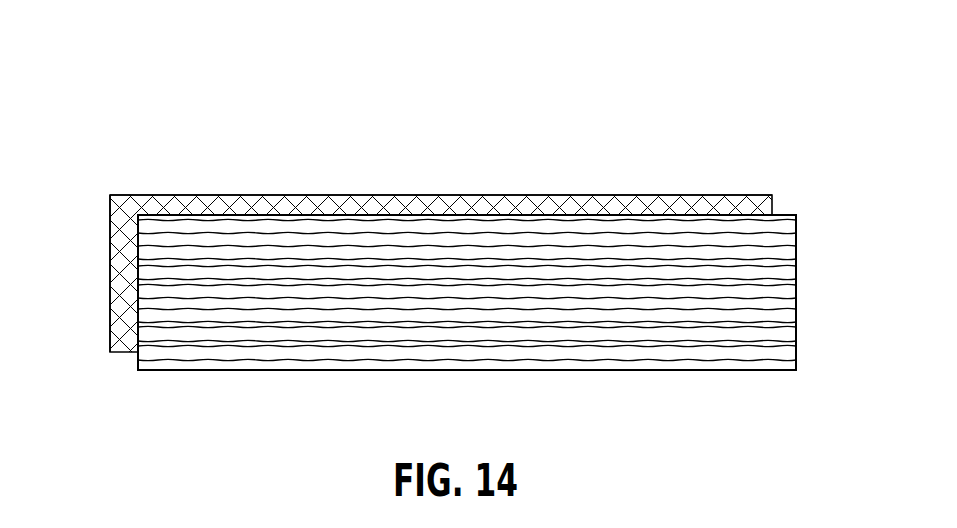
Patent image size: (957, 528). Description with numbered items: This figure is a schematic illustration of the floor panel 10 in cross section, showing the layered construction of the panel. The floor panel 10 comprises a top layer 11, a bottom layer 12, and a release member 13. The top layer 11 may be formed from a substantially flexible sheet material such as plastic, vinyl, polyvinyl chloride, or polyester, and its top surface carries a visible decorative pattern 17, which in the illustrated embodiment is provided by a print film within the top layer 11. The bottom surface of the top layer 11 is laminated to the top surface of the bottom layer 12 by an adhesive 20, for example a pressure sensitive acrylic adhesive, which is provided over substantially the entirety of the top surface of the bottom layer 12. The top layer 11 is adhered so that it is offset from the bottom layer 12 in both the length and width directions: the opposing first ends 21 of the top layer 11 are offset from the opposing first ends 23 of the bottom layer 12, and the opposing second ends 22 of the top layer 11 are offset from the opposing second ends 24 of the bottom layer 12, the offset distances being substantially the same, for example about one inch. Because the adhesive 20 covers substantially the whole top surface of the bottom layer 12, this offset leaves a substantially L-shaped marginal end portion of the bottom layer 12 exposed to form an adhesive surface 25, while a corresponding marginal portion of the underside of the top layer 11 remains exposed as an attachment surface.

The floor panel 10 is at (193, 168).
The top layer 11 is at (705, 358).
The bottom layer 12 is at (642, 195).
The release member 13 is at (460, 205).
The visible decorative pattern 17 is at (607, 360).
The adhesive 20 is at (722, 195).
The first ends of the top layer 21 is at (797, 288).
The second ends of the top layer 22 is at (224, 372).
The first ends of the bottom layer 23 is at (110, 216).
The second ends of the bottom layer 24 is at (396, 195).
The adhesive surface 25 is at (563, 195).